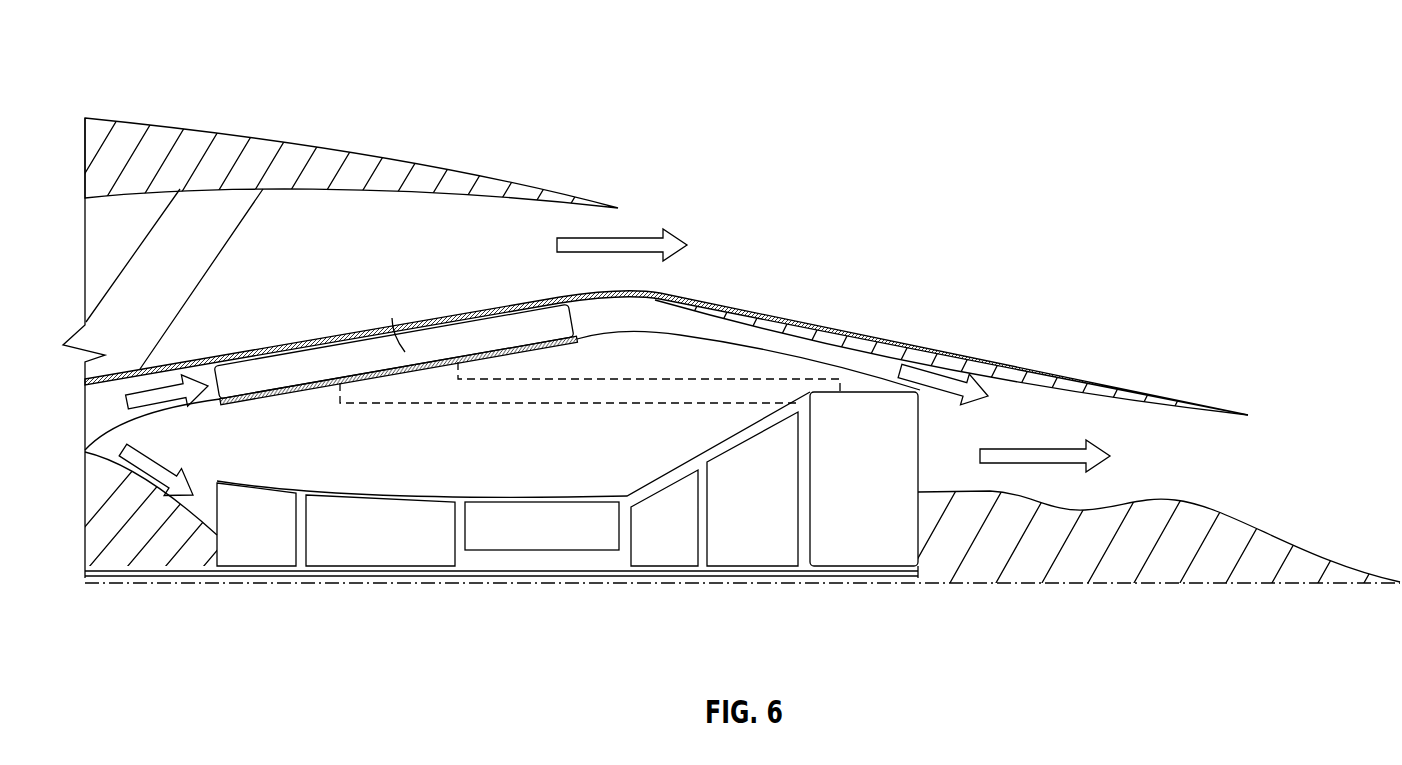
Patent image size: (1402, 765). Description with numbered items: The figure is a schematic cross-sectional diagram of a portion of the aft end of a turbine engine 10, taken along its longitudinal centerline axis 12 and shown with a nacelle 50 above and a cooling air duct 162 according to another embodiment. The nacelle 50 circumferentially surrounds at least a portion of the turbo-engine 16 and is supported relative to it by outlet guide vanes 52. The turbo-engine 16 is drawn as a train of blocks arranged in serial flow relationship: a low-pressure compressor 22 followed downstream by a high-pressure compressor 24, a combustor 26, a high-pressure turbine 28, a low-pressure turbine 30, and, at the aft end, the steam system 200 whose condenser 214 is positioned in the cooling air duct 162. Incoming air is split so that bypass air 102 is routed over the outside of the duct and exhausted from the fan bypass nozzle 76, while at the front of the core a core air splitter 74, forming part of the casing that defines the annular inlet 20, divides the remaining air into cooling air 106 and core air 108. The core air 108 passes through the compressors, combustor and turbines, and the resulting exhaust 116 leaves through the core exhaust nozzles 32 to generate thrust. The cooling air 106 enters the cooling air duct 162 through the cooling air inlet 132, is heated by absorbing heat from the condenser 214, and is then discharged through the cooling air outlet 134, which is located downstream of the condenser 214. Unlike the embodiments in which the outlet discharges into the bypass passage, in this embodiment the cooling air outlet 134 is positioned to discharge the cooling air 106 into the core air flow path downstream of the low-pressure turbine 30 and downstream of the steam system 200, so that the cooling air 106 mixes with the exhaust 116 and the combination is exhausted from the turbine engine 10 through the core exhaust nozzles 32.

The turbine engine 10 is at (823, 50).
The longitudinal centerline axis 12 is at (1135, 584).
The turbo-engine 16 is at (527, 634).
The annular inlet 20 is at (112, 442).
The low-pressure compressor 22 is at (255, 548).
The high-pressure compressor 24 is at (433, 542).
The combustor 26 is at (550, 542).
The high-pressure turbine 28 is at (662, 560).
The low-pressure turbine 30 is at (755, 543).
The core exhaust nozzles 32 is at (1203, 439).
The nacelle 50 is at (280, 163).
The outlet guide vanes 52 is at (197, 208).
The core air splitter 74 is at (160, 440).
The fan bypass nozzle 76 is at (657, 226).
The bypass air 102 is at (618, 245).
The cooling air 106 is at (217, 378).
The core air 108 is at (160, 446).
The exhaust 116 is at (1063, 456).
The cooling air inlet 132 is at (150, 378).
The cooling air outlet 134 is at (997, 400).
The cooling air duct 162 is at (700, 332).
The steam system 200 is at (855, 543).
The condenser 214 is at (293, 365).